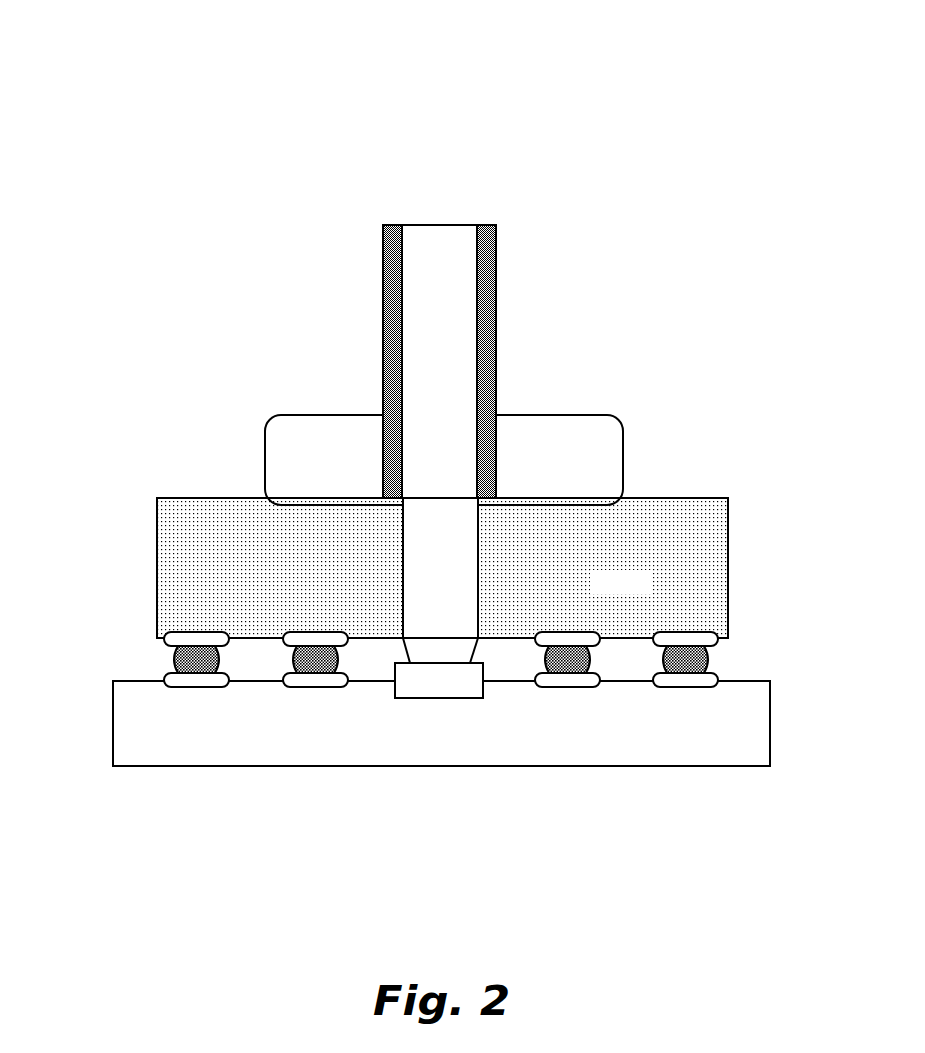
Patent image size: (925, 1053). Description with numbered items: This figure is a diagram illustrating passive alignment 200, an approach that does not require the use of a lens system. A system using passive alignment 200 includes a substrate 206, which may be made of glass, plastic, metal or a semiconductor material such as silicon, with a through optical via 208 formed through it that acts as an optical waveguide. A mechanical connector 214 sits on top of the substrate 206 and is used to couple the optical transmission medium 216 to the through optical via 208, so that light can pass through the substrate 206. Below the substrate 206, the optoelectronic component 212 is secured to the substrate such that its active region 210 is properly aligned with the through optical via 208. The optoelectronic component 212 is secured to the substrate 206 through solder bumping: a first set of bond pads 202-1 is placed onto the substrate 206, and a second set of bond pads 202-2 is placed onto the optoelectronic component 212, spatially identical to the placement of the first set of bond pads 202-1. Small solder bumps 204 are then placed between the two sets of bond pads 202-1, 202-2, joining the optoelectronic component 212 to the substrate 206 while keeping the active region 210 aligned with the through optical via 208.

The passive alignment 200 is at (156, 121).
The first set of bond pads 202-1 is at (728, 638).
The second set of bond pads 202-2 is at (166, 678).
The solder bumps 204 is at (190, 659).
The substrate 206 is at (602, 591).
The through optical via 208 is at (421, 573).
The active region 210 is at (421, 690).
The optoelectronic component 212 is at (241, 736).
The mechanical connector 214 is at (320, 470).
The optical transmission medium 216 is at (421, 320).